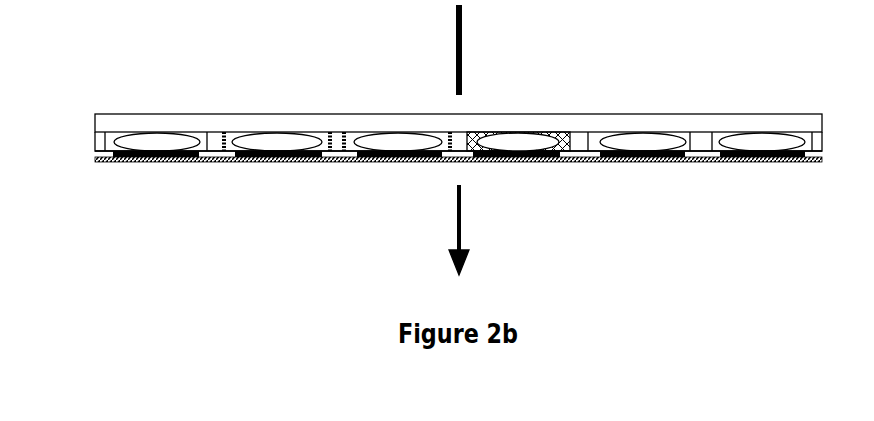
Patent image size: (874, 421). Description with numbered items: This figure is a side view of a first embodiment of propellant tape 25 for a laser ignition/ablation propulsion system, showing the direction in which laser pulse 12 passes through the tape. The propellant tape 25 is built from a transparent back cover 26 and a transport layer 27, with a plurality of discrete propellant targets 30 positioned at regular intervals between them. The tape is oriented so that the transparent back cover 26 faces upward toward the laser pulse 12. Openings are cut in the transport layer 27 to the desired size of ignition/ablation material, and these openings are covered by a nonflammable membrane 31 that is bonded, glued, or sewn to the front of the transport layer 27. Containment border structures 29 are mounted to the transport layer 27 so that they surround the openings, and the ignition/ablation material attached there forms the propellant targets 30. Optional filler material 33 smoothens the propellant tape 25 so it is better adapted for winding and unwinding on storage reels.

The laser pulse 12 is at (461, 49).
The propellant tape 25 is at (388, 32).
The transparent back cover 26 is at (245, 120).
The transport layer 27 is at (702, 155).
The containment border structures 29 is at (345, 130).
The propellant targets 30 is at (147, 140).
The nonflammable membrane 31 is at (760, 160).
The filler material 33 is at (570, 132).